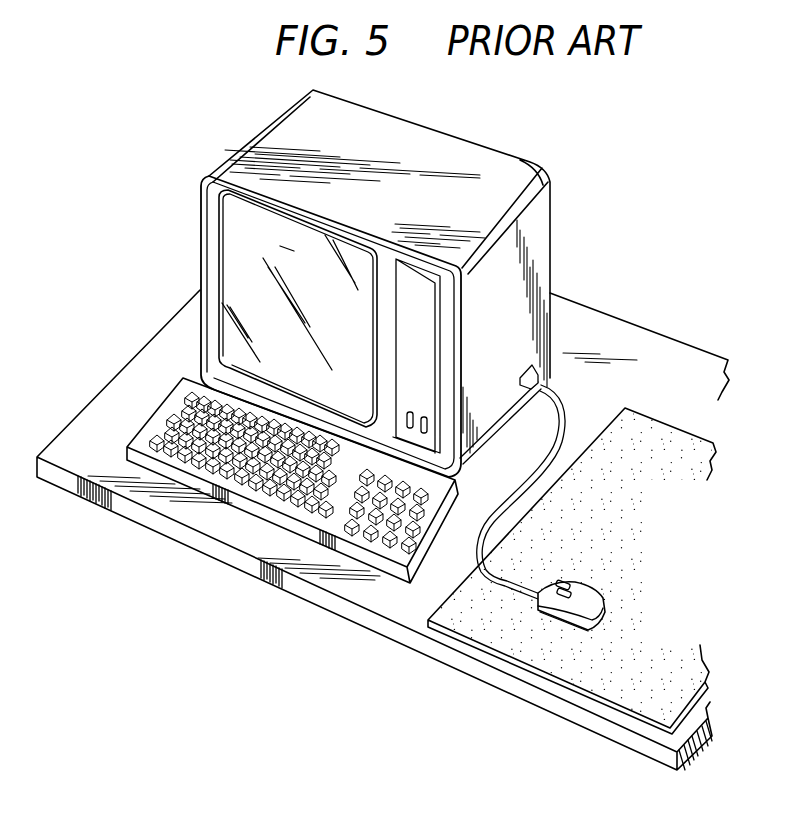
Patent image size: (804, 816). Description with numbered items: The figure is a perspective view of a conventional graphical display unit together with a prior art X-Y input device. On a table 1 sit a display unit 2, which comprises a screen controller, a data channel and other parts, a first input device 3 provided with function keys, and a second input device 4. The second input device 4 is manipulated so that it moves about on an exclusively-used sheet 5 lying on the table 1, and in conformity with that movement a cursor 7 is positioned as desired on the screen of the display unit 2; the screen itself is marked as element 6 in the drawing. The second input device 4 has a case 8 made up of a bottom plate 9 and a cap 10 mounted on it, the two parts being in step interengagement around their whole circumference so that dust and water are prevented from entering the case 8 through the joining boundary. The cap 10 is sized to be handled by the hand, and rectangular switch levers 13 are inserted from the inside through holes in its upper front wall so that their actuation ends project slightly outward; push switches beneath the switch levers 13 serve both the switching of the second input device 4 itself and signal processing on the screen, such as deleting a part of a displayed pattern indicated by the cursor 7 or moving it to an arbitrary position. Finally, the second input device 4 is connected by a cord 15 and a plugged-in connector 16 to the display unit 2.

The table 1 is at (372, 601).
The display unit 2 is at (369, 283).
The first input device 3 is at (282, 522).
The second input device 4 is at (589, 597).
The exclusively-used sheet 5 is at (500, 632).
The display screen 6 is at (264, 308).
The cursor 7 is at (240, 218).
The case 8 is at (593, 618).
The bottom plate 9 is at (573, 628).
The cap 10 is at (582, 591).
The switch levers 13 is at (563, 581).
The cord 15 is at (563, 408).
The plugged-in connector 16 is at (527, 366).